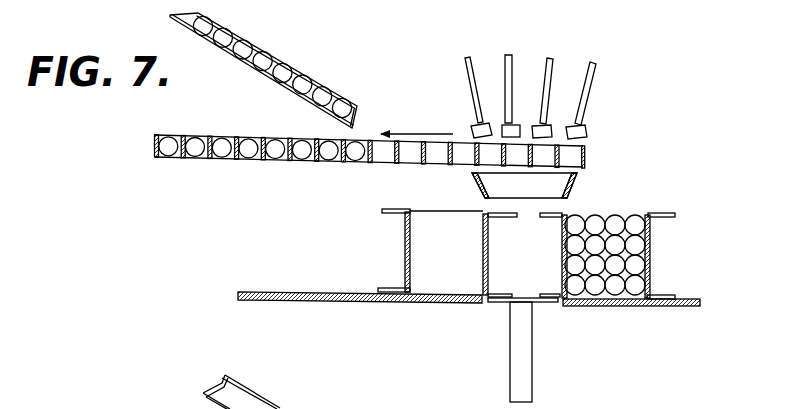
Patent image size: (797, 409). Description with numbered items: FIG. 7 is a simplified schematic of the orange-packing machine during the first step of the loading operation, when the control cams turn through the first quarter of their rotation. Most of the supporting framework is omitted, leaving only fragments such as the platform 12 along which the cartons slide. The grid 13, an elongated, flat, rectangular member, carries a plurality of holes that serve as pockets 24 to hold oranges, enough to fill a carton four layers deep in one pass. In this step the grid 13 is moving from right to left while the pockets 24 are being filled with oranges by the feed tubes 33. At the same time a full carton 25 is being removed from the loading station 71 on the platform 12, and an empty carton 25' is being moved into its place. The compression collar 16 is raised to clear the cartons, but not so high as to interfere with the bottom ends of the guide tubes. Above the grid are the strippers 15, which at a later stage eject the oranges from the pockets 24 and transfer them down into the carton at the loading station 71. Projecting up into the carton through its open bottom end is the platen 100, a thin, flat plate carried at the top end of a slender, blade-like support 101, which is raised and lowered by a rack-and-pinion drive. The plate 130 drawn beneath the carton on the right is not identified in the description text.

The feed tube 33 is at (299, 66).
The grid 13 is at (336, 166).
The pockets 24 is at (465, 156).
The stripper 15 is at (598, 105).
The compression collar 16 is at (577, 190).
The empty carton 25' is at (404, 250).
The loading station 71 is at (547, 266).
The carton 25 is at (641, 256).
The platform 12 is at (358, 302).
The platen 100 is at (521, 300).
The support 101 is at (523, 340).
The right base plate 130 is at (642, 307).